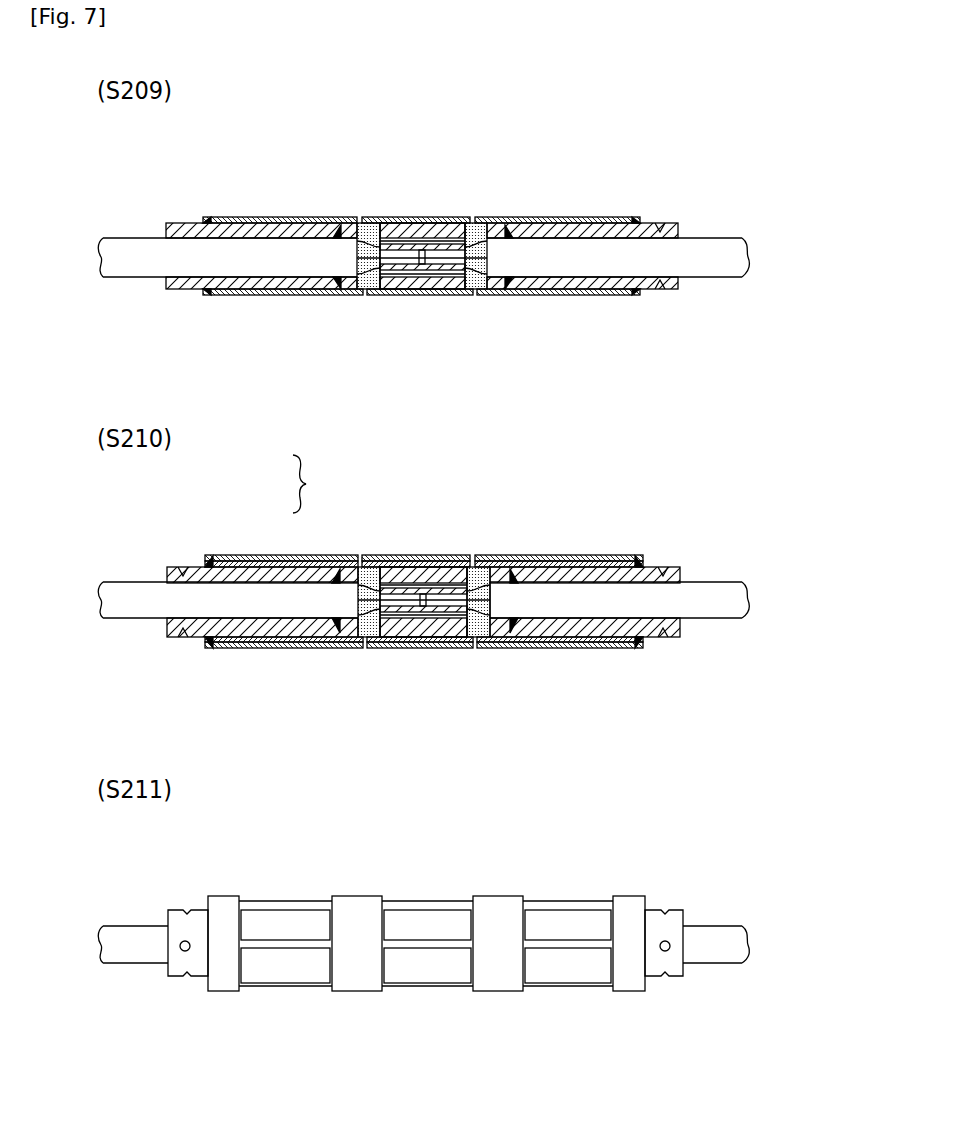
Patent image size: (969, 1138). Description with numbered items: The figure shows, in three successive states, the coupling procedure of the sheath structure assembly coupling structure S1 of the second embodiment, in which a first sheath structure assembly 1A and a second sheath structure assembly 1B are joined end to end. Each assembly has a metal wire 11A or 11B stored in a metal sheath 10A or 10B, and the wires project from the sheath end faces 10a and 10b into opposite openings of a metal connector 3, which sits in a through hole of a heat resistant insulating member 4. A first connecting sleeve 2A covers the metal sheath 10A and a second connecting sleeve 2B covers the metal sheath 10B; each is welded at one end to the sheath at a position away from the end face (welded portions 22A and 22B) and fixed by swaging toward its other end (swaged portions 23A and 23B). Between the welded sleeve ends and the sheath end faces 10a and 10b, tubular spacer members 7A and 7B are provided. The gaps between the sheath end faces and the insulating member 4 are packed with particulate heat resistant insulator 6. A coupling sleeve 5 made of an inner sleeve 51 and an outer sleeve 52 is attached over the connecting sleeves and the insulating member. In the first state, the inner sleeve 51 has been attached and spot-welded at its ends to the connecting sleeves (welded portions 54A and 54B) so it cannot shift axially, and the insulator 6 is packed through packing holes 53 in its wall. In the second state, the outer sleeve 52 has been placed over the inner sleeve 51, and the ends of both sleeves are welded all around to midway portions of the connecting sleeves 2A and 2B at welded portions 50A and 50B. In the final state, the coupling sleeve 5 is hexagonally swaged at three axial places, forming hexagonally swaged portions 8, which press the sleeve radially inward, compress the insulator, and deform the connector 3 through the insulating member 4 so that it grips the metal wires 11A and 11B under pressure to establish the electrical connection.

The first sheath structure assembly 1A is at (112, 236).
The second sheath structure assembly 1B is at (705, 236).
The metal sheath 10A is at (140, 237).
The metal sheath 10B is at (733, 237).
The end face 10a is at (358, 632).
The end face 10b is at (490, 632).
The first connecting sleeve 2A is at (190, 220).
The second connecting sleeve 2B is at (660, 220).
The connector 3 is at (437, 290).
The heat resistant insulating member 4 is at (408, 300).
The coupling sleeve 5 is at (355, 905).
The inner sleeve 51 is at (558, 216).
The outer sleeve 52 is at (258, 562).
The packing holes 53 is at (361, 220).
The welded portion 54A is at (205, 216).
The welded portion 54B is at (640, 216).
The welded portion 50A is at (207, 553).
The welded portion 50B is at (645, 553).
The heat resistant insulator 6 is at (363, 290).
The spacer member 7A is at (340, 229).
The spacer member 7B is at (503, 228).
The hexagonally swaged portions 8 is at (285, 972).
The metal wire 11A is at (392, 244).
The metal wire 11B is at (443, 244).
The welded portion 22A is at (338, 636).
The welded portion 22B is at (518, 636).
The swaged portion 23A is at (185, 638).
The swaged portion 23B is at (658, 295).
The sheath structure assembly coupling structure S1 is at (571, 530).